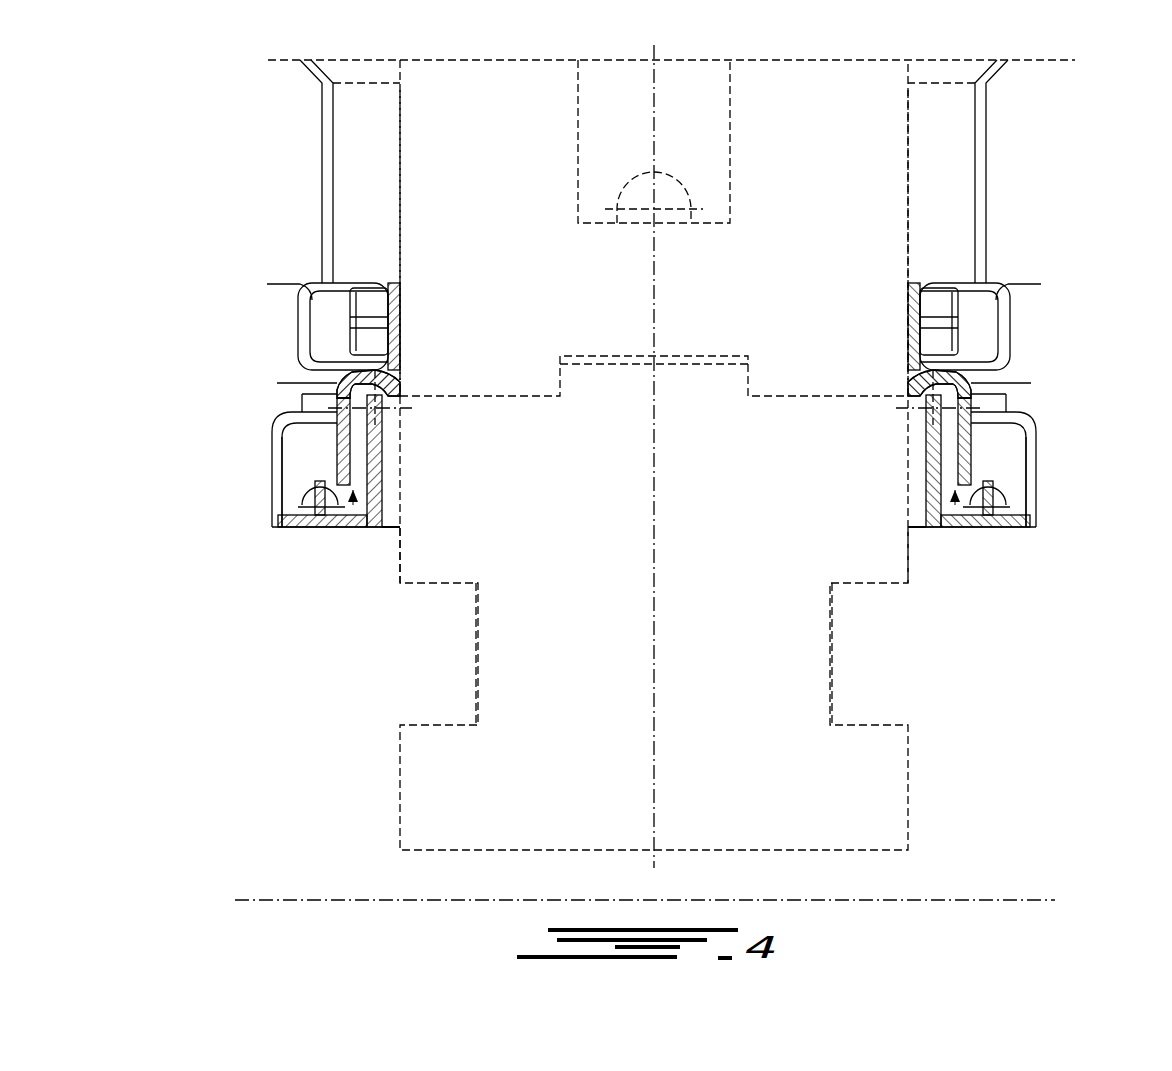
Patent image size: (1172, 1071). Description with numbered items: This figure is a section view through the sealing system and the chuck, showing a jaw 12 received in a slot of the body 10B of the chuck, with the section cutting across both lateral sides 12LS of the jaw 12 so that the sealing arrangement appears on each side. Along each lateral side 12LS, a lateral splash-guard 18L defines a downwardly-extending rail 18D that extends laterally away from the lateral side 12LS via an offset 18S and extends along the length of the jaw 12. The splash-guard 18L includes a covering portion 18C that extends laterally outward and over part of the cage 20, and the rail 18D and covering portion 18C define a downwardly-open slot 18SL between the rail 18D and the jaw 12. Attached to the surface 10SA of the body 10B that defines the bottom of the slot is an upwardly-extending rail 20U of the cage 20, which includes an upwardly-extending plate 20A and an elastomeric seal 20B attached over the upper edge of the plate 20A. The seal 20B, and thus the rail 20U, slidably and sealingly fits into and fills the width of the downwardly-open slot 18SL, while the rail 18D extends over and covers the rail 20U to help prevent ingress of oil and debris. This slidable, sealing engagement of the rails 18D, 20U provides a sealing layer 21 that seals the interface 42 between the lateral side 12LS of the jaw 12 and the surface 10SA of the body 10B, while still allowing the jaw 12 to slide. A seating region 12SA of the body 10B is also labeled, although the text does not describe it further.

The jaw 12 is at (752, 633).
The body 10B is at (330, 770).
The lateral side 12LS is at (397, 172).
The sealing layer 21 is at (368, 276).
The offset 18S is at (343, 365).
The elastomeric seal 20B is at (345, 383).
The upwardly-extending rail 20U is at (654, 384).
The upwardly-extending plate 20A is at (337, 400).
The lateral splash-guard 18L is at (337, 445).
The covering portion 18C is at (330, 453).
The downwardly-extending rail 18D is at (380, 398).
The surface 10SA is at (272, 518).
The cage 20 is at (302, 536).
The downwardly-open slot 18SL is at (348, 528).
The interface 42 is at (380, 543).
The seating surface of body 12SA is at (378, 527).